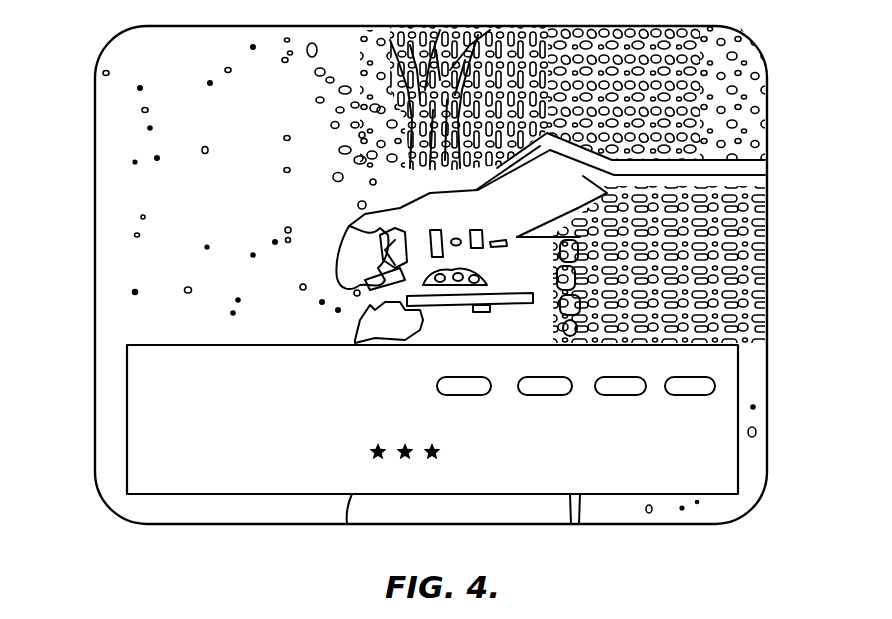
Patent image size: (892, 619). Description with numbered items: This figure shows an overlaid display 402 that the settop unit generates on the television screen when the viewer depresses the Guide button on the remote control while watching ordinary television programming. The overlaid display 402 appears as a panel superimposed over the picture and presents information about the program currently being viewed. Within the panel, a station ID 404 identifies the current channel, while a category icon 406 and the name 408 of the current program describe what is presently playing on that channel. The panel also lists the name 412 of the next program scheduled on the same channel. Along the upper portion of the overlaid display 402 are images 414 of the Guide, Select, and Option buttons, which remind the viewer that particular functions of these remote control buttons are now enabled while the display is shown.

The overlaid display 402 is at (133, 411).
The station ID 404 is at (724, 475).
The category icon 406 is at (437, 462).
The name of the current program 408 is at (347, 410).
The name of the next program 412 is at (300, 466).
The images of the Guide, Select, and Option buttons 414 is at (640, 404).